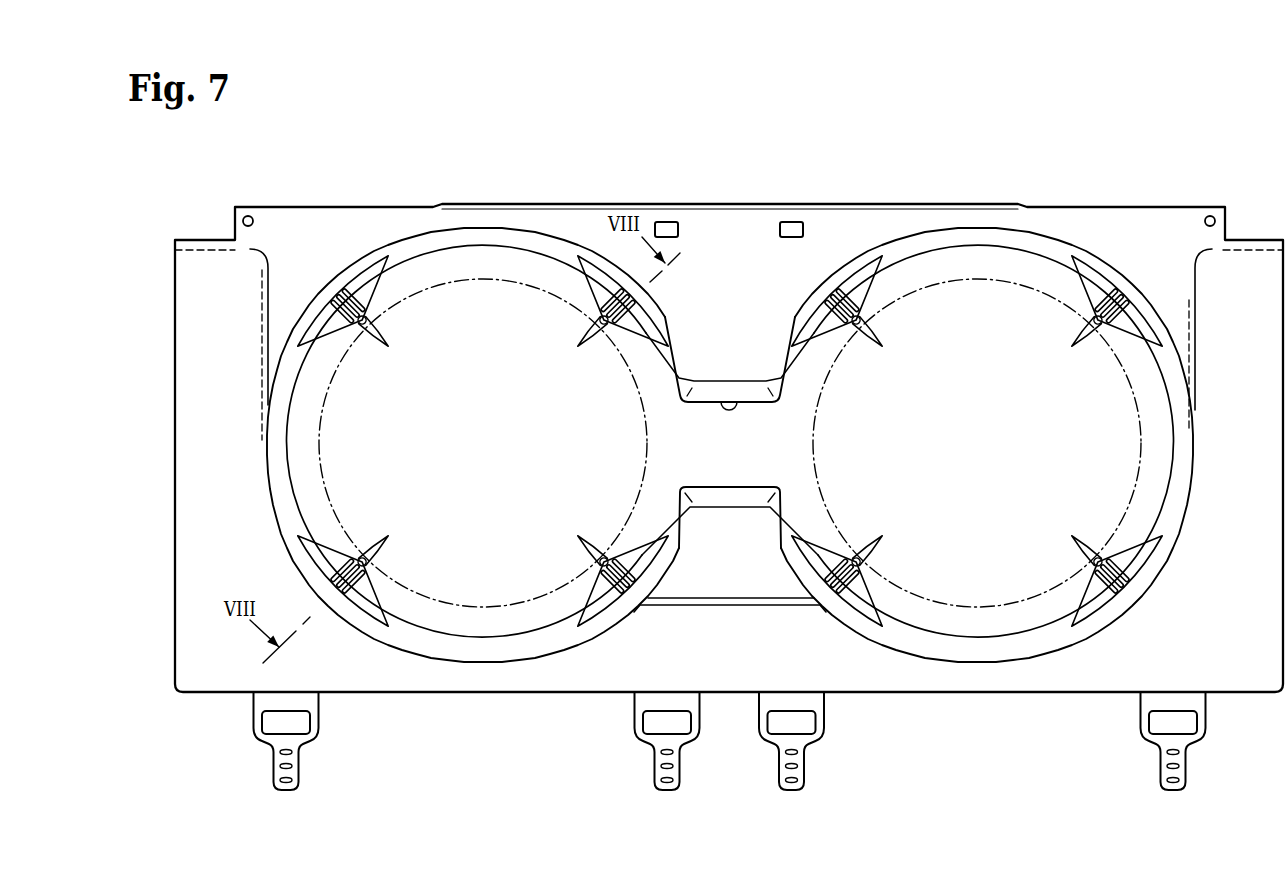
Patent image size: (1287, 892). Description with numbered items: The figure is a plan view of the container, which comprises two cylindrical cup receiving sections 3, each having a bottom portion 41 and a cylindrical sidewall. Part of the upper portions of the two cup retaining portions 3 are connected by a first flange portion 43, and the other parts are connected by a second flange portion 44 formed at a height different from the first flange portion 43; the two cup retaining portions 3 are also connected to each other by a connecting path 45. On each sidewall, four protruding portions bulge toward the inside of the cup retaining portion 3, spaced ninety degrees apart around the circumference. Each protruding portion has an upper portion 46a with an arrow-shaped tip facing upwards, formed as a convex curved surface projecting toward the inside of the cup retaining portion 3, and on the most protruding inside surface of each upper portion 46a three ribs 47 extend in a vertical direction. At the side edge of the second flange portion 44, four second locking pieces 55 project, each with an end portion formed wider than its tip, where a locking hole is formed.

The cup receiving section 3 is at (505, 333).
The bottom portion 41 is at (503, 572).
The first flange portion 43 is at (308, 223).
The second flange portion 44 is at (200, 496).
The connecting path 45 is at (732, 402).
The upper portion of protruding portion 46a is at (366, 290).
The rib 47 is at (389, 347).
The second locking piece 55 is at (302, 798).